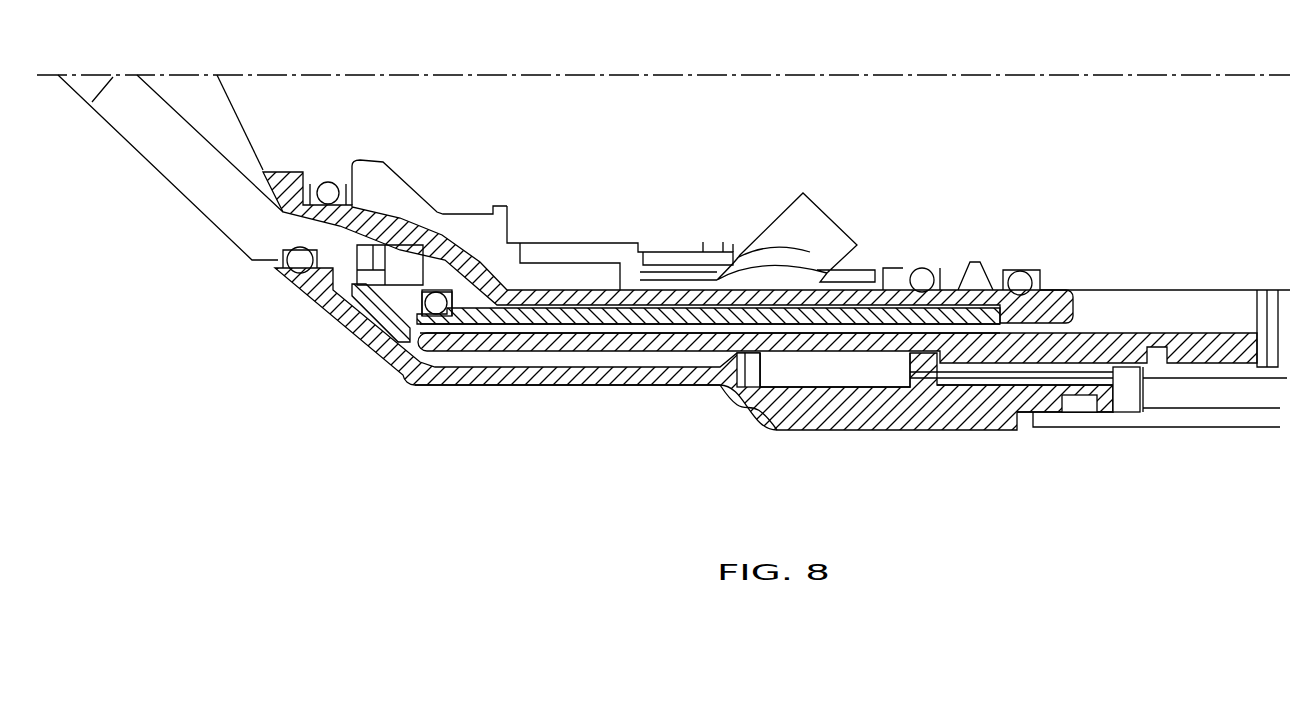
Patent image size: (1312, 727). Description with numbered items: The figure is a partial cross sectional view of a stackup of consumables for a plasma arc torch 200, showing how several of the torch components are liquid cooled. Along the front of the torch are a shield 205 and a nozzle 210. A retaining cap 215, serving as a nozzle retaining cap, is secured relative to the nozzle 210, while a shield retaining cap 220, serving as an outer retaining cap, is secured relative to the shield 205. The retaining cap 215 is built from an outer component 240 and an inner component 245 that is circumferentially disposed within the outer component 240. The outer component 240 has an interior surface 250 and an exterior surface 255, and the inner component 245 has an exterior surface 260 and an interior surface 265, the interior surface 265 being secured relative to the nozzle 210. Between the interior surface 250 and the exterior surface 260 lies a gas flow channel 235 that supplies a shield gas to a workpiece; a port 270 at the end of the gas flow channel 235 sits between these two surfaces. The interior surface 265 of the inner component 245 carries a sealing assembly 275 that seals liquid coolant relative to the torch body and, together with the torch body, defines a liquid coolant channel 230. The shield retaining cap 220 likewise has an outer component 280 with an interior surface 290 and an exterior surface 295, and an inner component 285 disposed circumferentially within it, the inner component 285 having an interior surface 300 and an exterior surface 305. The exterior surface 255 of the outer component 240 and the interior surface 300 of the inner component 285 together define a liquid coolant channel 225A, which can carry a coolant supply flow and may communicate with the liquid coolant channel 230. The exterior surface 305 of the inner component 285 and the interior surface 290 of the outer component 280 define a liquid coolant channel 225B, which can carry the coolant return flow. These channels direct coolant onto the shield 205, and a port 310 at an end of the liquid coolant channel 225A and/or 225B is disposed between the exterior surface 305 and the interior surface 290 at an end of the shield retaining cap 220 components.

The plasma arc torch 200 is at (346, 514).
The shield 205 is at (190, 188).
The nozzle 210 is at (245, 122).
The retaining cap 215 is at (1053, 278).
The shield retaining cap 220 is at (339, 358).
The liquid coolant channel 225A is at (583, 330).
The liquid coolant channel 225B is at (773, 372).
The liquid coolant channel 230 is at (470, 232).
The gas flow channel 235 is at (513, 307).
The outer component 240 is at (1021, 296).
The inner component 245 is at (512, 345).
The interior surface 250 is at (873, 308).
The exterior surface 255 is at (986, 345).
The exterior surface 260 is at (500, 243).
The interior surface 265 is at (717, 252).
The port 270 is at (450, 310).
The sealing assembly 275 is at (330, 182).
The outer component 280 is at (717, 378).
The inner component 285 is at (1123, 360).
The interior surface 290 is at (552, 392).
The exterior surface 295 is at (460, 387).
The interior surface 300 is at (1110, 322).
The exterior surface 305 is at (880, 355).
The port 310 is at (1086, 380).